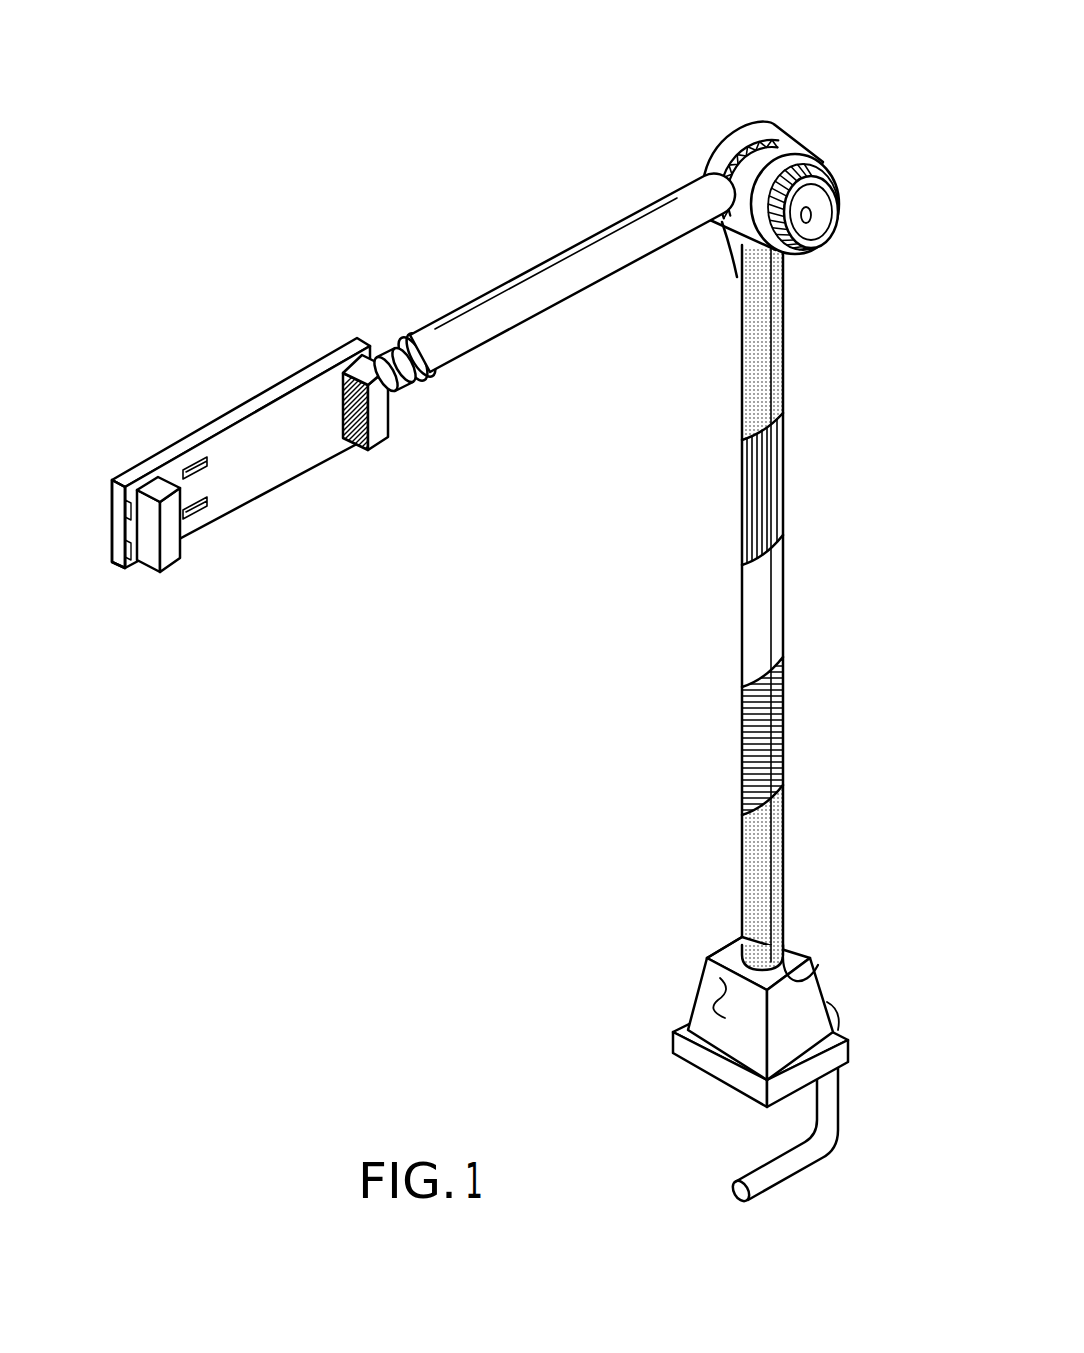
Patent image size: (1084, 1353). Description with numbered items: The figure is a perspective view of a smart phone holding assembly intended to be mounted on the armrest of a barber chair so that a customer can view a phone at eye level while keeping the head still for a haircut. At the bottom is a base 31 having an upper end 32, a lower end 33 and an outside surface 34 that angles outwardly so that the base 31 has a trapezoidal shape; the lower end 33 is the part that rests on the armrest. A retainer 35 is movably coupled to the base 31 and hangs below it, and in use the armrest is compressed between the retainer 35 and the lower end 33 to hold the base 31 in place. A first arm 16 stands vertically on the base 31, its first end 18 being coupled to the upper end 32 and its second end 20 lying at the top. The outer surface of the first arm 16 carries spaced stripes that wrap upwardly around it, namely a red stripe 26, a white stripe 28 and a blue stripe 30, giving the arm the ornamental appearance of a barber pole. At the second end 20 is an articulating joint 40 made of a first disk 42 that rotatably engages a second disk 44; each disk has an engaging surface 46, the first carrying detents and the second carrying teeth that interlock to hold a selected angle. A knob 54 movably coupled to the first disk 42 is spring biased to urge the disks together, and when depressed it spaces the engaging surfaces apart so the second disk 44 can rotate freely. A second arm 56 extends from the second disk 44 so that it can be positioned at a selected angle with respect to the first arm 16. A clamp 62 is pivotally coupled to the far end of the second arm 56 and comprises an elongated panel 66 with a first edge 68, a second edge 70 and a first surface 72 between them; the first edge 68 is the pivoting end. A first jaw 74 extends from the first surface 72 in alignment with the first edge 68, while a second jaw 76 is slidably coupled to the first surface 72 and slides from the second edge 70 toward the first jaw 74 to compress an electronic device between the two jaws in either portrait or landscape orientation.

The first arm 16 is at (810, 607).
The first end 18 is at (759, 1026).
The second end 20 is at (752, 253).
The red stripe 26 is at (805, 456).
The white stripe 28 is at (805, 559).
The blue stripe 30 is at (806, 706).
The base 31 is at (705, 957).
The upper end 32 is at (727, 953).
The lower end 33 is at (720, 1083).
The outside surface 34 is at (715, 988).
The retainer 35 is at (840, 1128).
The articulating joint 40 is at (678, 204).
The first disk 42 is at (857, 195).
The second disk 44 is at (731, 162).
The engaging surface 46 is at (752, 132).
The knob 54 is at (840, 212).
The second arm 56 is at (547, 256).
The clamp 62 is at (231, 448).
The panel 66 is at (112, 478).
The first edge 68 is at (372, 353).
The second edge 70 is at (112, 522).
The first surface 72 is at (255, 472).
The first jaw 74 is at (382, 438).
The second jaw 76 is at (167, 560).